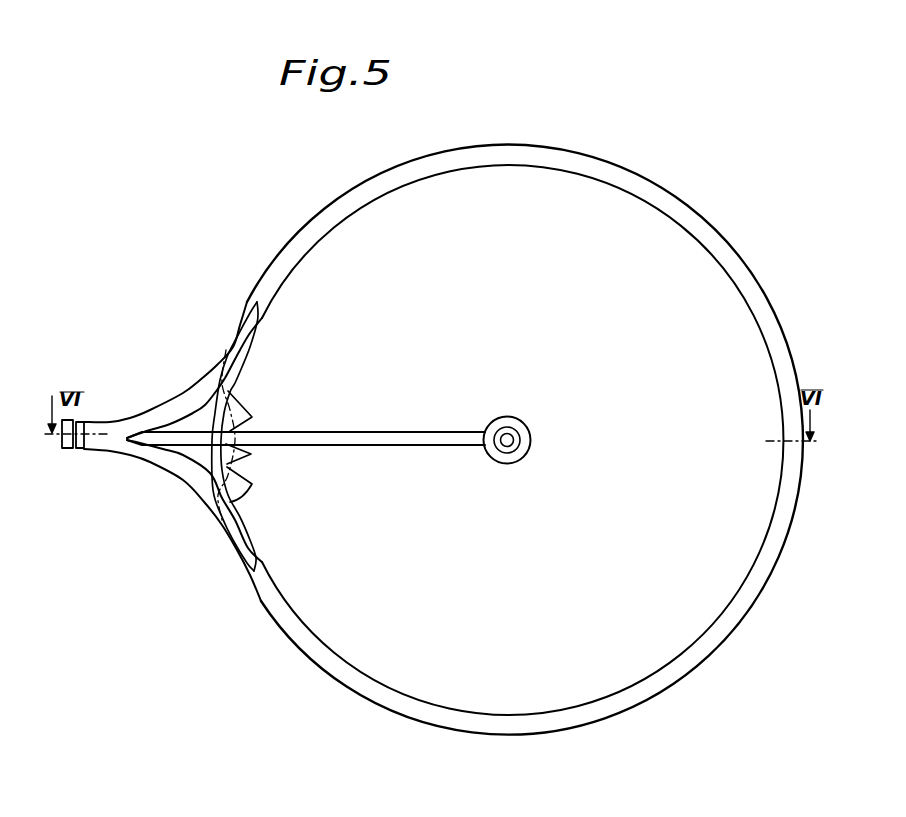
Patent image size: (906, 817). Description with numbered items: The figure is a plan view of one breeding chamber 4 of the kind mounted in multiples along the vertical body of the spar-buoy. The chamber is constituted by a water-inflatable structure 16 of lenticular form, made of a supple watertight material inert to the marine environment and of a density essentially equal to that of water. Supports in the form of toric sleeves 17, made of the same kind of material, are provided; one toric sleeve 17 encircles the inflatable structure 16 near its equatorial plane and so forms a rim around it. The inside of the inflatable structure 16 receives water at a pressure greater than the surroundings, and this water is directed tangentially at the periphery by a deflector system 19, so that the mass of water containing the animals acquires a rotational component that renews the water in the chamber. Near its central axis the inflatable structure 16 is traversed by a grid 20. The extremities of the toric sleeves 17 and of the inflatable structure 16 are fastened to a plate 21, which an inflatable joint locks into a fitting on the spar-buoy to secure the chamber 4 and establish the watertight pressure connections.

The breeding chamber 4 is at (681, 692).
The inflatable structure 16 is at (547, 698).
The toric sleeve 17 is at (393, 433).
The deflector system 19 is at (243, 496).
The grid 20 is at (528, 452).
The plate 21 is at (80, 451).